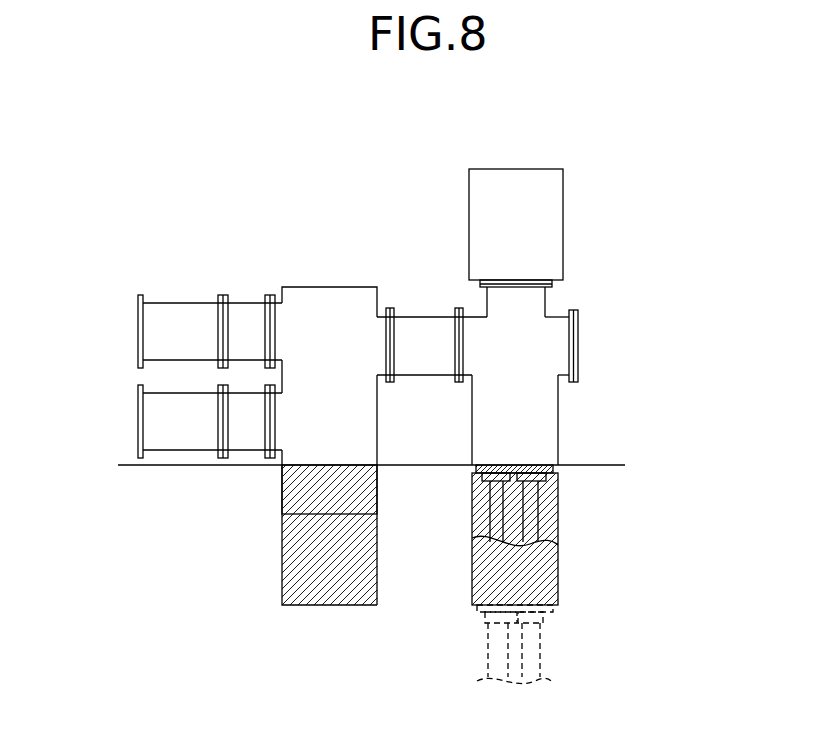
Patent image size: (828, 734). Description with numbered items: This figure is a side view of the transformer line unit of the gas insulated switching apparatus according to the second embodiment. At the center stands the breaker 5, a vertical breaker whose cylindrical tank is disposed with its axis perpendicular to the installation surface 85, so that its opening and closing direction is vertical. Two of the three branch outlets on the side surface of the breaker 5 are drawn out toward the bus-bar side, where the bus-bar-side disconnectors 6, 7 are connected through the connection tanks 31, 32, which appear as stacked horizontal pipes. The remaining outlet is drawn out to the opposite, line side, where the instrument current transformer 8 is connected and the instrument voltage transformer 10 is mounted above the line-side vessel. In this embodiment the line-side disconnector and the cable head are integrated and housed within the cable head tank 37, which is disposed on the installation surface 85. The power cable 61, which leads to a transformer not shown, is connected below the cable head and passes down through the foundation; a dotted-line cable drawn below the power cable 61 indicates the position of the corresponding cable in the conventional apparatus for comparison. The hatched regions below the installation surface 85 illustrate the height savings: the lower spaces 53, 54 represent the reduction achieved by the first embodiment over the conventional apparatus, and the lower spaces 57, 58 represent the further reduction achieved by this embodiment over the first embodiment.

The breaker 5 is at (377, 413).
The bus-bar-side disconnector 6 is at (171, 393).
The bus-bar-side disconnector 7 is at (181, 303).
The instrument current transformer 8 is at (422, 317).
The instrument voltage transformer 10 is at (517, 169).
The connection tank 31 is at (248, 303).
The connection tank 32 is at (247, 453).
The cable head tank 37 is at (560, 347).
The lower space 53 is at (282, 560).
The lower space 54 is at (558, 562).
The lower space 57 is at (282, 500).
The lower space 58 is at (560, 500).
The power cable 61 is at (497, 505).
The installation surface 85 is at (592, 465).